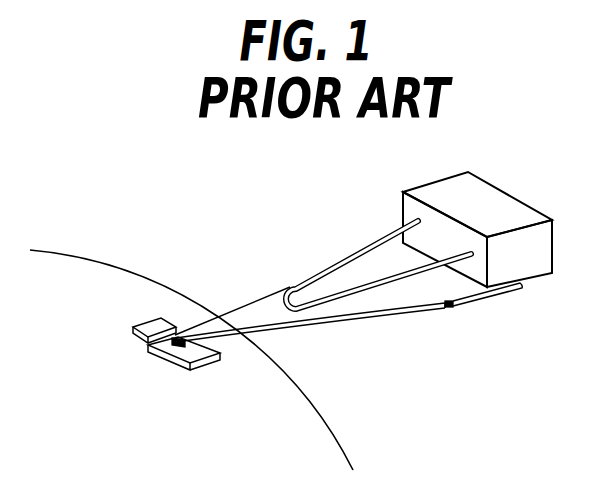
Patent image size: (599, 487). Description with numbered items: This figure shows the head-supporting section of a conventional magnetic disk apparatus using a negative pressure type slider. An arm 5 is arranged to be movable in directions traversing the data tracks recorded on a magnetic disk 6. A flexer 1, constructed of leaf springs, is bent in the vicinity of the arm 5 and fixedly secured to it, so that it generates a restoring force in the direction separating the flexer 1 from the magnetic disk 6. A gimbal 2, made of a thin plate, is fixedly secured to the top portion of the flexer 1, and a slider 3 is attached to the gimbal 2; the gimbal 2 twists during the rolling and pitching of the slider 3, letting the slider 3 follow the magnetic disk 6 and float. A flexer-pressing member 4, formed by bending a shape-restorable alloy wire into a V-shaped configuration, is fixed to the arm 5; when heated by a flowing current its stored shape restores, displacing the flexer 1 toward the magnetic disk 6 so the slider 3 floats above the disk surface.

The flexer 1 is at (392, 298).
The gimbal 2 is at (157, 347).
The slider 3 is at (152, 325).
The flexer-pressing member 4 is at (344, 259).
The arm 5 is at (412, 190).
The magnetic disk 6 is at (330, 458).